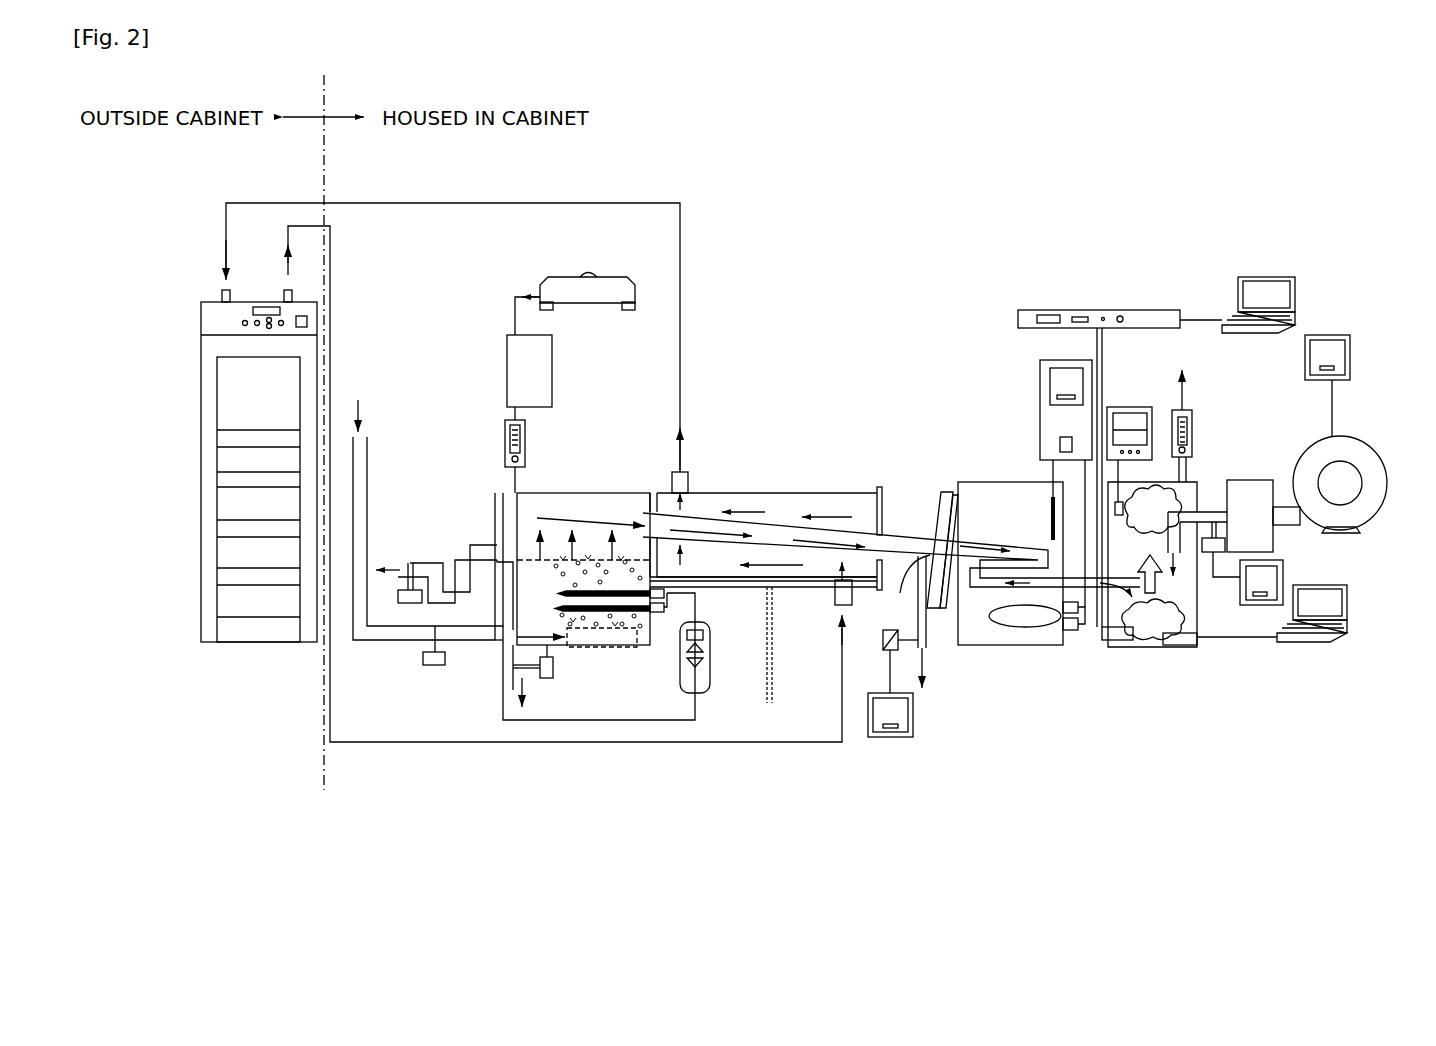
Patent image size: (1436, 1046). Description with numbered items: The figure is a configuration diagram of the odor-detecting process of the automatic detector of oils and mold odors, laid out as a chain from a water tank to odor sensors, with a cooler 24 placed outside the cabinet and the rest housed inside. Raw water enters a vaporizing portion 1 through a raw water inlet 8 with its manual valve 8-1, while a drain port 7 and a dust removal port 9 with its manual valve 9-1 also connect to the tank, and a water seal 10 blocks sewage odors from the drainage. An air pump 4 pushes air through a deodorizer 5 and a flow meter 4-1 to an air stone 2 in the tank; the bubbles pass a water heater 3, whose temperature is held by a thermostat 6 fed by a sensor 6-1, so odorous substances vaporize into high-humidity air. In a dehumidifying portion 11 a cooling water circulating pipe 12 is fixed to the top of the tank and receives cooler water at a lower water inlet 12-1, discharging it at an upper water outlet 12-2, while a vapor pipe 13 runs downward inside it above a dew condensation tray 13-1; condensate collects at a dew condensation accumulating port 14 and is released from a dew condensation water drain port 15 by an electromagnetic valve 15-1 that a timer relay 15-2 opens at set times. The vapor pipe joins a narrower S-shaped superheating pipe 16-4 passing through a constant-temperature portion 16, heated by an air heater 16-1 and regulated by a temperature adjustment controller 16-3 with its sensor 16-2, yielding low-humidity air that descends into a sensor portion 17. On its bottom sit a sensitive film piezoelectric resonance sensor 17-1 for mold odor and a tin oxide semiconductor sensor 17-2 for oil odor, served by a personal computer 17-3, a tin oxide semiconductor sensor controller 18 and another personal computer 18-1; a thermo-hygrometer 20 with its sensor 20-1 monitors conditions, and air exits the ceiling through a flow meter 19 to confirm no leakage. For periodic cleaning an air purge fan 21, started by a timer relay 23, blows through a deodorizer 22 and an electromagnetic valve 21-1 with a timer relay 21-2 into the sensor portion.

The vaporizing portion 1 is at (645, 645).
The air stone 2 is at (620, 647).
The water heater 3 is at (590, 598).
The air pump 4 is at (568, 277).
The flow meter 4-1 is at (527, 445).
The deodorizer 5 is at (552, 372).
The thermostat 6 is at (712, 672).
The sensor 6-1 is at (510, 560).
The drain port 7 is at (410, 565).
The raw water inlet 8 is at (370, 446).
The manual valve 8-1 is at (405, 605).
The dust removal port 9 is at (524, 685).
The manual valve 9-1 is at (557, 675).
The water seal 10 is at (455, 600).
The dehumidifying portion 11 is at (760, 485).
The cooling water circulating pipe 12 is at (706, 502).
The water inlet 12-1 is at (836, 595).
The water outlet 12-2 is at (672, 484).
The vapor pipe 13 is at (782, 535).
The dew condensation tray 13-1 is at (750, 590).
The dew condensation accumulating port 14 is at (908, 586).
The dew condensation water drain port 15 is at (928, 640).
The electromagnetic valve 15-1 is at (882, 645).
The timer relay 15-2 is at (913, 720).
The constant-temperature portion 16 is at (1060, 647).
The air heater 16-1 is at (1025, 628).
The sensor 16-2 is at (1050, 522).
The temperature adjustment controller 16-3 is at (1040, 390).
The superheating pipe 16-4 is at (948, 520).
The sensor portion 17 is at (1130, 648).
The sensitive film piezoelectric resonance sensor 17-1 is at (1183, 647).
The tin oxide semiconductor sensor 17-2 is at (1115, 642).
The personal computer 17-3 is at (1348, 610).
The tin oxide semiconductor sensor controller 18 is at (1135, 310).
The personal computer 18-1 is at (1296, 292).
The flow meter 19 is at (1195, 432).
The thermo-hygrometer 20 is at (1125, 407).
The sensor 20-1 is at (1125, 508).
The air purge fan 21 is at (1362, 445).
The electromagnetic valve 21-1 is at (1214, 555).
The timer relay 21-2 is at (1285, 575).
The deodorizer 22 is at (1258, 480).
The timer relay 23 is at (1350, 352).
The cooler 24 is at (200, 572).